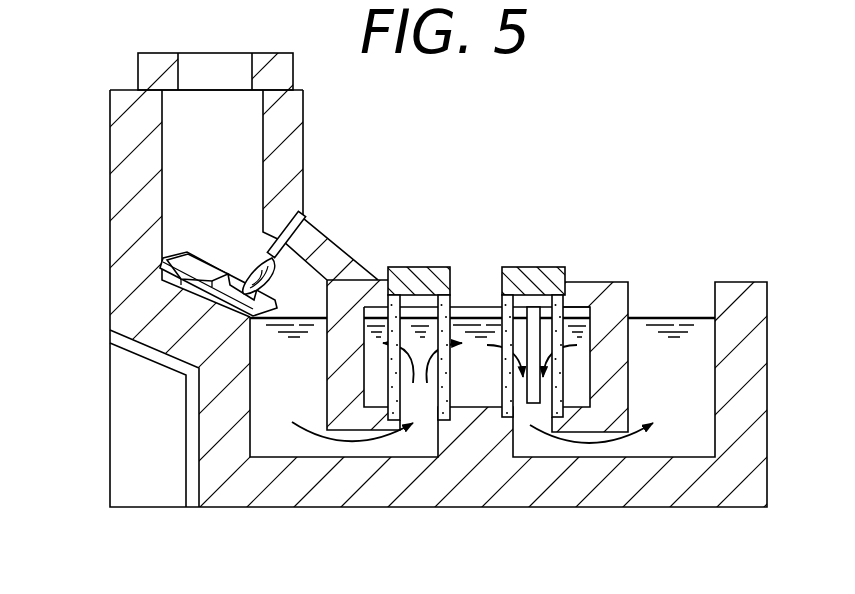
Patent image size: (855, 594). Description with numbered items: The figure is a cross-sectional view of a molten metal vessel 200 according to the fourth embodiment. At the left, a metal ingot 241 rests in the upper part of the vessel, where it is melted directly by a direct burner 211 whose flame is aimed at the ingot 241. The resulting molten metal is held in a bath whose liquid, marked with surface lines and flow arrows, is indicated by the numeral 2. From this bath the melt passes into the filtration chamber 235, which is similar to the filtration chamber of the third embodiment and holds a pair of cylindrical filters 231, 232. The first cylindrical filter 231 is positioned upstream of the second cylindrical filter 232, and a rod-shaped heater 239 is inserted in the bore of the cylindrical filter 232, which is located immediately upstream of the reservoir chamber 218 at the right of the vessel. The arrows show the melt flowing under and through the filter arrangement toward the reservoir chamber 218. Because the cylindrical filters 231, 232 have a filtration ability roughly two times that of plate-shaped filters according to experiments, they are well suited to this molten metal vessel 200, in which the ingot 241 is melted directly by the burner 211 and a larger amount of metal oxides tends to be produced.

The molten metal vessel 200 is at (634, 180).
The plating solution 2 is at (277, 405).
The direct burner 211 is at (307, 218).
The reservoir chamber 218 is at (665, 357).
The cylindrical filter 231 is at (423, 266).
The cylindrical filter 232 is at (548, 266).
The filtration chamber 235 is at (580, 322).
The rod-shaped heater 239 is at (535, 400).
The metal ingot 241 is at (190, 268).